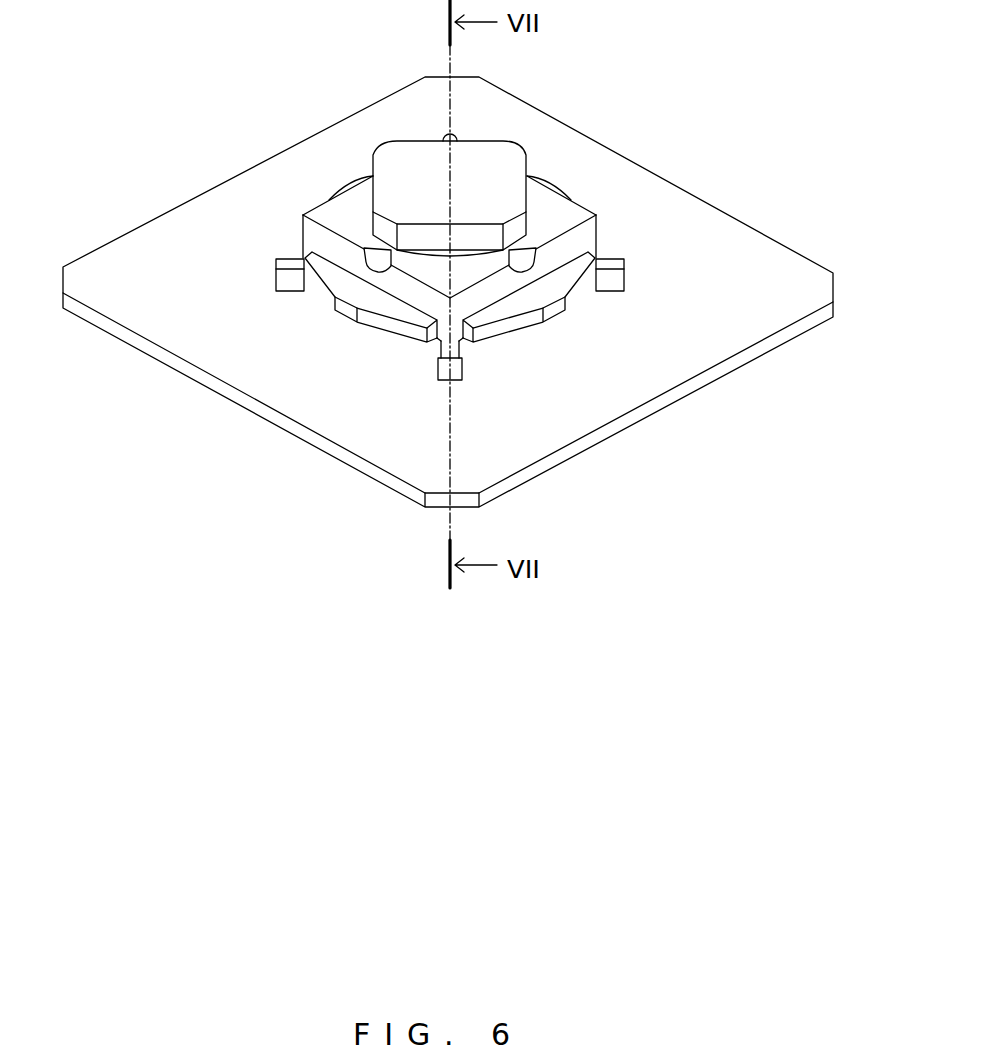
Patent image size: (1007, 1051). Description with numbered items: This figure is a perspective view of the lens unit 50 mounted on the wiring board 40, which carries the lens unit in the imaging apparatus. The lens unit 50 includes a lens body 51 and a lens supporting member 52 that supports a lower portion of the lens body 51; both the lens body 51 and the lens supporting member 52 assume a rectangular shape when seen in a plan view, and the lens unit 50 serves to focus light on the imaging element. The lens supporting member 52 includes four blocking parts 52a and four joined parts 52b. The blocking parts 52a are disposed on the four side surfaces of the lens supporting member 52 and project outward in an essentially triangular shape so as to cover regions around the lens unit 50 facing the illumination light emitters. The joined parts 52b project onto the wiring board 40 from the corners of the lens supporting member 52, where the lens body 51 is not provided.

The wiring board 40 is at (150, 344).
The lens unit 50 is at (662, 46).
The lens body 51 is at (517, 158).
The lens supporting member 52 is at (542, 202).
The blocking part 52a is at (566, 197).
The joined part 52b is at (618, 278).